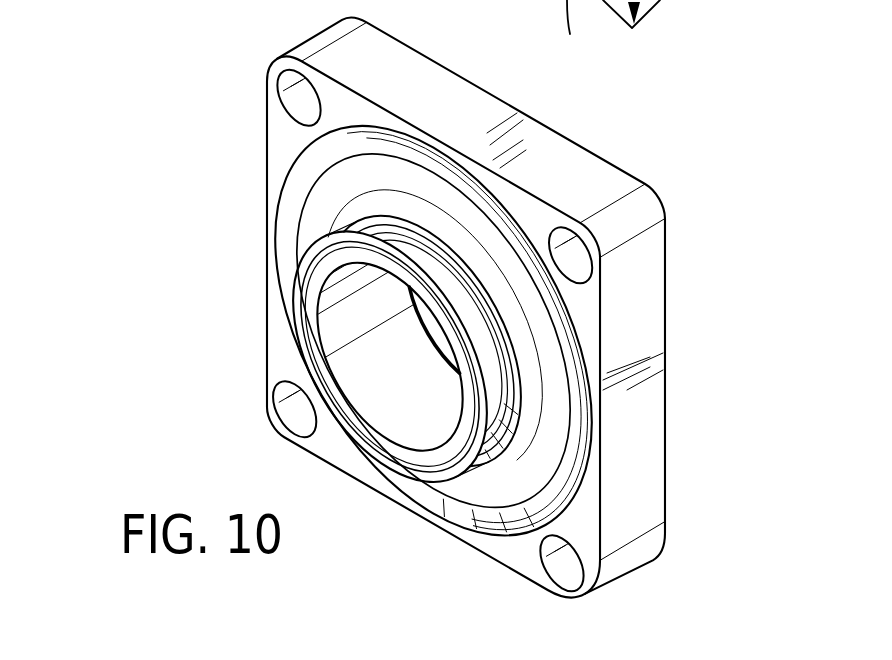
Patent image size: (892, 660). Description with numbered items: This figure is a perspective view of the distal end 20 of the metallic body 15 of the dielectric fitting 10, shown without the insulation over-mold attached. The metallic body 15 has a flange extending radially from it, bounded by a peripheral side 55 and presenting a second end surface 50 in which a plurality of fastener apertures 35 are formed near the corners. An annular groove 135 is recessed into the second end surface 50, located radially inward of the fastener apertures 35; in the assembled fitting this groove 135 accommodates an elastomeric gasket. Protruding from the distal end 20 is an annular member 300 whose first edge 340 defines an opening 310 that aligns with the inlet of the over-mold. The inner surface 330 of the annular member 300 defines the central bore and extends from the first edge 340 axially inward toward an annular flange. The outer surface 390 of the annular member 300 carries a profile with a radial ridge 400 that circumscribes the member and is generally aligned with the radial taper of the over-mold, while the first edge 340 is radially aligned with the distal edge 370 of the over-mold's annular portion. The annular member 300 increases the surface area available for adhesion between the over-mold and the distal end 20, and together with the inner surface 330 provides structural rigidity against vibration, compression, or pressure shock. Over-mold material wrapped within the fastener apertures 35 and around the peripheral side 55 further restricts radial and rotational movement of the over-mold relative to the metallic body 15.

The dielectric fitting 10 is at (134, 66).
The metallic body 15 is at (217, 375).
The distal end 20 is at (460, 210).
The fastener apertures 35 is at (277, 89).
The second end surface 50 is at (278, 145).
The peripheral side 55 is at (578, 170).
The annular groove 135 is at (285, 215).
The annular member 300 is at (477, 355).
The opening 310 is at (394, 383).
The inner surface 330 is at (347, 306).
The first edge 340 is at (358, 423).
The distal edge 370 is at (546, 17).
The outer surface 390 is at (475, 293).
The radial ridge 400 is at (473, 337).